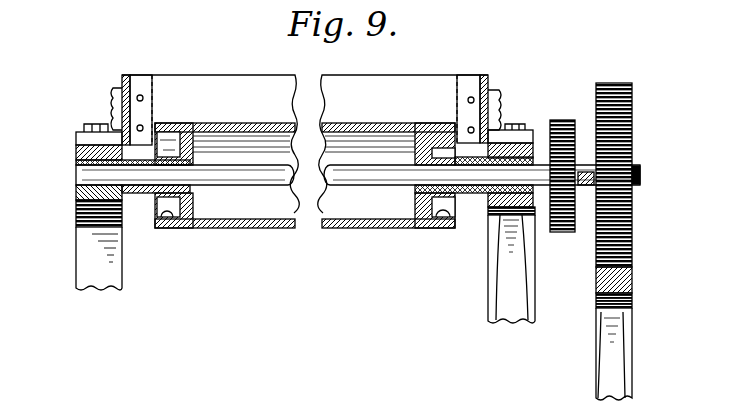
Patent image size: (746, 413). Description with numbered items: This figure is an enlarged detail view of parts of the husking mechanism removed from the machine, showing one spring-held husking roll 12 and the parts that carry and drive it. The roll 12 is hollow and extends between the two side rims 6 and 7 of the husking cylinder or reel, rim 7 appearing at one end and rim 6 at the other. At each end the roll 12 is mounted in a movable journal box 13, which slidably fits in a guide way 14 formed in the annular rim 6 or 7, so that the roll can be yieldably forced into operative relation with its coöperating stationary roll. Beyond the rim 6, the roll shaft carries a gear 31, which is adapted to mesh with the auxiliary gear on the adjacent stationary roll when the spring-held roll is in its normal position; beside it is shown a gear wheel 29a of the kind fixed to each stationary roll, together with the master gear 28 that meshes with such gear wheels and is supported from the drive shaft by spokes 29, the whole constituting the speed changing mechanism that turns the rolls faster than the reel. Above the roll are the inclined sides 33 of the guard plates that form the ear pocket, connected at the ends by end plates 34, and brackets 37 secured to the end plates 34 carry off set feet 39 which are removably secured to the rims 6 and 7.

The side rim 6 is at (488, 275).
The side rim 7 is at (76, 264).
The roll 12 is at (288, 127).
The movable journal box 13 is at (76, 190).
The guide way 14 is at (76, 222).
The master gear 28 is at (600, 287).
The spoke 29 is at (610, 361).
The gear wheel 29a is at (632, 254).
The gear 31 is at (573, 236).
The side 33 is at (305, 144).
The end plate 34 is at (131, 86).
The bracket 37 is at (113, 104).
The off set foot 39 is at (76, 138).